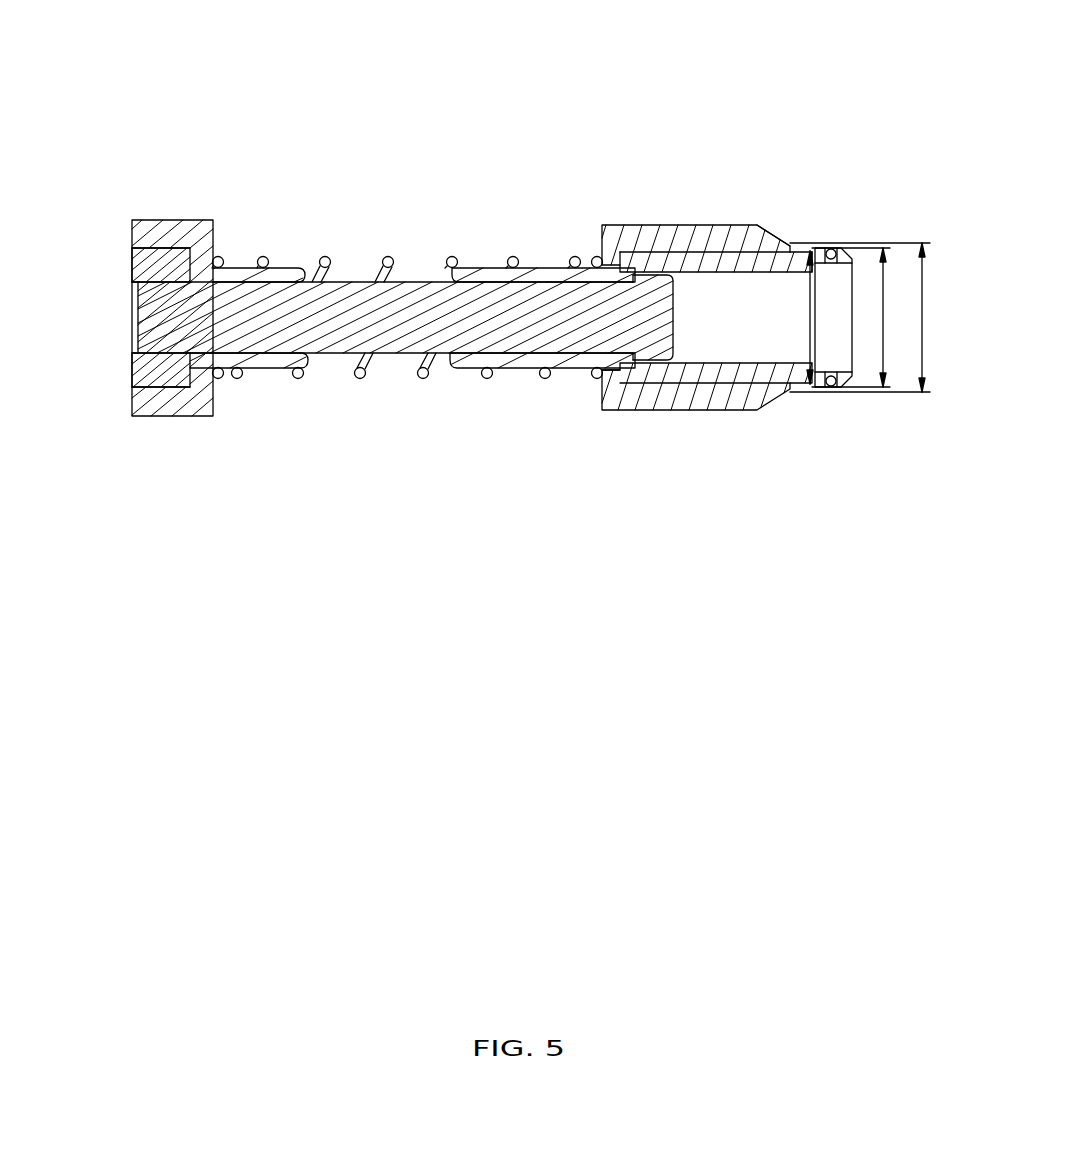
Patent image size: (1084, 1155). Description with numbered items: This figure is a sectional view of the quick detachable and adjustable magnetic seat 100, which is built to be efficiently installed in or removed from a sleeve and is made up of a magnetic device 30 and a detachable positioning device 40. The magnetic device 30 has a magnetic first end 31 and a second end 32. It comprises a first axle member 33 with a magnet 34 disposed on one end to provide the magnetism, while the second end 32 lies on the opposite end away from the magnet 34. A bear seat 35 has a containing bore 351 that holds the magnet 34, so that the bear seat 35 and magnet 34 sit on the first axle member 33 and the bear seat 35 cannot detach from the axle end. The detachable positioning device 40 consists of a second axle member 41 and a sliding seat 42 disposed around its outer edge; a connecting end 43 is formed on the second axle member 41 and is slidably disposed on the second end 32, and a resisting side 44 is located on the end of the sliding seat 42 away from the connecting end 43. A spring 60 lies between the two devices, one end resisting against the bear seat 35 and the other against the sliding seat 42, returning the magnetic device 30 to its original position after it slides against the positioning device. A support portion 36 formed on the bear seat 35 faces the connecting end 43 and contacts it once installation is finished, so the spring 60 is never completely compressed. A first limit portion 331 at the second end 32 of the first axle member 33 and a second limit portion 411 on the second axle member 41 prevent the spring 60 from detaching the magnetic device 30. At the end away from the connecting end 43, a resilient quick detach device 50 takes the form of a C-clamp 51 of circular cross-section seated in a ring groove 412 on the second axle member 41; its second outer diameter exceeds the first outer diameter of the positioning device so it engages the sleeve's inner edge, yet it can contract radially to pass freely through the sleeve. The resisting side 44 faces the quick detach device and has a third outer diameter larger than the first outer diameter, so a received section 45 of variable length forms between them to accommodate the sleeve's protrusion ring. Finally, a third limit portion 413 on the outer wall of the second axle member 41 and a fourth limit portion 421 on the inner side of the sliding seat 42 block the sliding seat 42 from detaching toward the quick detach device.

The adjustable magnetic seat 100 is at (285, 28).
The magnetic device 30 is at (337, 148).
The first end 31 is at (132, 402).
The second end 32 is at (662, 317).
The first axle member 33 is at (392, 352).
The first limit portion 331 is at (627, 368).
The magnet 34 is at (138, 263).
The bear seat 35 is at (195, 232).
The containing bore 351 is at (162, 248).
The support portion 36 is at (290, 268).
The detachable positioning device 40 is at (665, 432).
The second axle member 41 is at (700, 262).
The second limit portion 411 is at (640, 266).
The ring groove 412 is at (811, 262).
The third limit portion 413 is at (612, 385).
The sliding seat 42 is at (715, 413).
The fourth limit portion 421 is at (632, 256).
The connecting end 43 is at (473, 364).
The resisting side 44 is at (792, 243).
The received section 45 is at (815, 383).
The resilient quick detach device 50 is at (849, 600).
The C-clamp 51 is at (832, 390).
The spring 60 is at (452, 256).